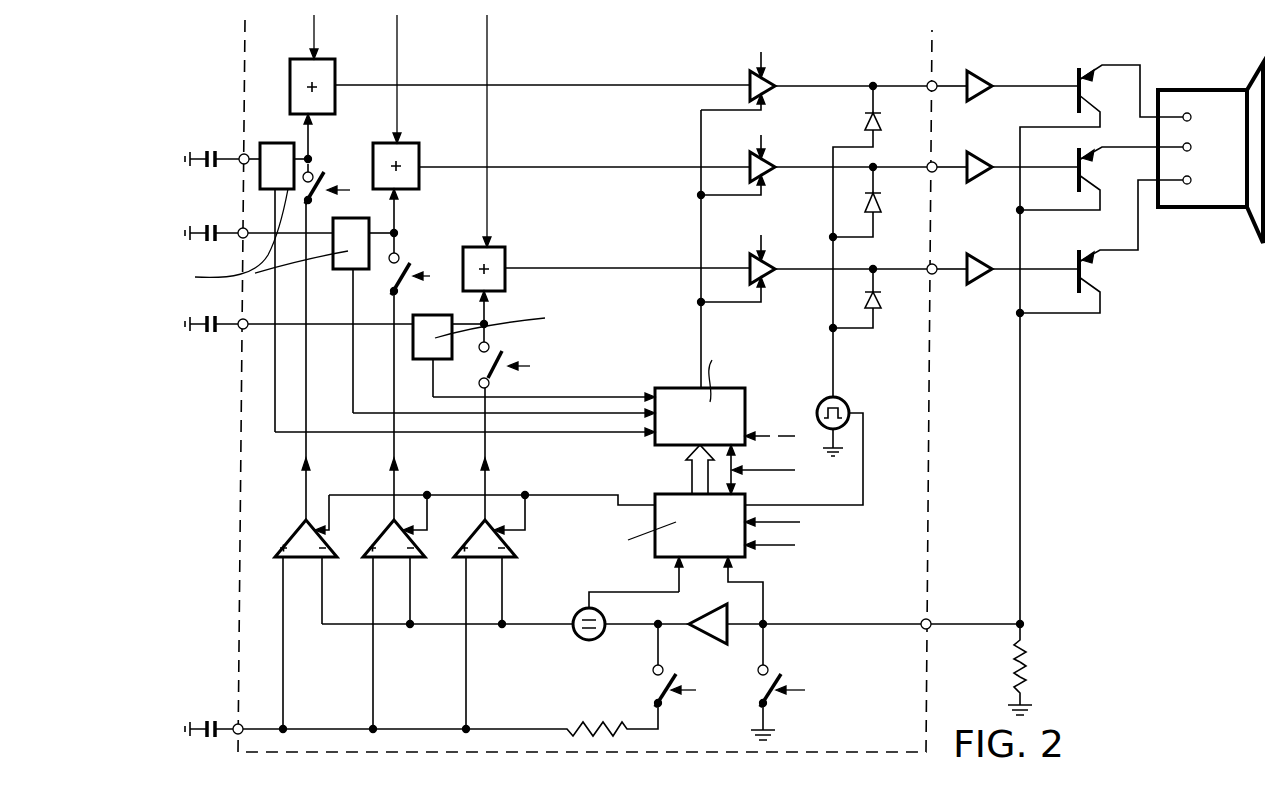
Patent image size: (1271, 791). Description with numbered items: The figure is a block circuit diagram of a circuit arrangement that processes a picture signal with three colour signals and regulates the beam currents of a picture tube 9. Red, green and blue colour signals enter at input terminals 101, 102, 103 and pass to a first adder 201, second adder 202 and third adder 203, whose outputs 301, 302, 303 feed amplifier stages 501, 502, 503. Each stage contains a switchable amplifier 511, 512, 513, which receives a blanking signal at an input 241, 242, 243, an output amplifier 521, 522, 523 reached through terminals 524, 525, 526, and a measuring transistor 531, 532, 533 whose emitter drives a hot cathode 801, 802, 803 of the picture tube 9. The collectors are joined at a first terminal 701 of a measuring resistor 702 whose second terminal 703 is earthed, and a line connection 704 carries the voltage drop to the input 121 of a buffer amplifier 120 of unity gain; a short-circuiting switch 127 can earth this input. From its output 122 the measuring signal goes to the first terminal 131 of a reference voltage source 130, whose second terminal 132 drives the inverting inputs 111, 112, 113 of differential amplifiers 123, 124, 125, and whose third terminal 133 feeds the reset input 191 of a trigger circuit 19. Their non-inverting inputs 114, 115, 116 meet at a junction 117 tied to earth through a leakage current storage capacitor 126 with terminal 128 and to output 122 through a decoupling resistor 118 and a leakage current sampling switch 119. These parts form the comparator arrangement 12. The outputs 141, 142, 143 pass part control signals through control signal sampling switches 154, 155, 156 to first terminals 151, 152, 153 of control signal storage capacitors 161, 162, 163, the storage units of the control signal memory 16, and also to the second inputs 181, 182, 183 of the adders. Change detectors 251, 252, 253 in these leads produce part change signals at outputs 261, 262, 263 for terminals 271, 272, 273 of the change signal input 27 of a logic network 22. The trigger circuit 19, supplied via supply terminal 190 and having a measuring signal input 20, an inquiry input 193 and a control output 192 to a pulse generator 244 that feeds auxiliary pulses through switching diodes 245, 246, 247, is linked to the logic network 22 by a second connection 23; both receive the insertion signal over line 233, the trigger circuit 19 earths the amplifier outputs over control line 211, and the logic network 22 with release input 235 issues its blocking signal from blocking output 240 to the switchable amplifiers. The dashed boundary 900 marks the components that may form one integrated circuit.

The picture tube 9 is at (1251, 218).
The comparator arrangement 12 is at (512, 663).
The control signal memory 16 is at (219, 85).
The trigger circuit 19 is at (655, 494).
The measuring signal input 20 is at (765, 577).
The logic network 22 is at (677, 388).
The second connection 23 is at (691, 478).
The change signal input 27 is at (634, 383).
The first input terminal 101 is at (314, 25).
The second input terminal 102 is at (397, 25).
The third input terminal 103 is at (487, 25).
The inverting input 111 is at (322, 601).
The inverting input 112 is at (410, 601).
The inverting input 113 is at (502, 596).
The non-inverting input 114 is at (282, 562).
The non-inverting input 115 is at (372, 566).
The non-inverting input 116 is at (465, 562).
The junction 117 is at (370, 725).
The decoupling resistor 118 is at (578, 724).
The leakage current sampling switch 119 is at (656, 691).
The buffer amplifier 120 is at (710, 647).
The input 121 is at (729, 630).
The output 122 is at (693, 634).
The differential amplifier 123 is at (286, 533).
The differential amplifier 124 is at (378, 542).
The differential amplifier 125 is at (466, 540).
The leakage current storage capacitor 126 is at (206, 718).
The short-circuiting switch 127 is at (760, 691).
The terminal 128 is at (241, 722).
The reference voltage source 130 is at (589, 641).
The first terminal 131 is at (628, 628).
The second terminal 132 is at (560, 628).
The third terminal 133 is at (594, 600).
The output 141 is at (301, 505).
The output 142 is at (388, 515).
The output 143 is at (484, 510).
The first terminal 151 is at (242, 153).
The first terminal 152 is at (241, 228).
The first terminal 153 is at (241, 319).
The control signal sampling switch 154 is at (314, 196).
The control signal sampling switch 155 is at (390, 284).
The control signal sampling switch 156 is at (487, 364).
The control signal storage capacitor 161 is at (206, 150).
The control signal storage capacitor 162 is at (206, 225).
The control signal storage capacitor 163 is at (206, 316).
The second input 181 is at (313, 122).
The second input 182 is at (398, 196).
The second input 183 is at (490, 298).
The supply terminal 190 is at (790, 520).
The reset input 191 is at (683, 588).
The control output 192 is at (860, 515).
The inquiry input 193 is at (785, 543).
The first adder 201 is at (338, 62).
The second adder 202 is at (419, 147).
The third adder 203 is at (505, 250).
The control line 211 is at (578, 493).
The line 233 is at (775, 480).
The release input 235 is at (778, 427).
The blocking output 240 is at (702, 346).
The input 241 is at (759, 55).
The input 242 is at (759, 139).
The input 243 is at (759, 243).
The pulse generator 244 is at (843, 400).
The switching diode 245 is at (881, 120).
The switching diode 246 is at (881, 210).
The switching diode 247 is at (881, 300).
The change detector 251 is at (277, 143).
The change detector 252 is at (385, 205).
The change detector 253 is at (445, 305).
The output 261 is at (275, 215).
The output 262 is at (350, 273).
The output 263 is at (431, 364).
The terminal 271 is at (618, 435).
The terminal 272 is at (556, 415).
The terminal 273 is at (580, 395).
The output 301 is at (338, 85).
The output 302 is at (420, 170).
The output 303 is at (506, 268).
The amplifier stage 501 is at (880, 65).
The amplifier stage 502 is at (923, 152).
The amplifier stage 503 is at (905, 255).
The switchable amplifier 511 is at (768, 80).
The switchable amplifier 512 is at (768, 162).
The switchable amplifier 513 is at (768, 266).
The output amplifier 521 is at (981, 72).
The output amplifier 522 is at (981, 152).
The output amplifier 523 is at (979, 255).
The terminal 524 is at (937, 92).
The terminal 525 is at (937, 172).
The terminal 526 is at (937, 275).
The measuring transistor 531 is at (1091, 99).
The measuring transistor 532 is at (1091, 176).
The measuring transistor 533 is at (1091, 285).
The first terminal 701 is at (1022, 638).
The measuring resistor 702 is at (1022, 664).
The second terminal 703 is at (1022, 694).
The line connection 704 is at (930, 621).
The hot cathode 801 is at (1191, 117).
The hot cathode 802 is at (1191, 147).
The hot cathode 803 is at (1191, 180).
The circuit boundary 900 is at (882, 752).